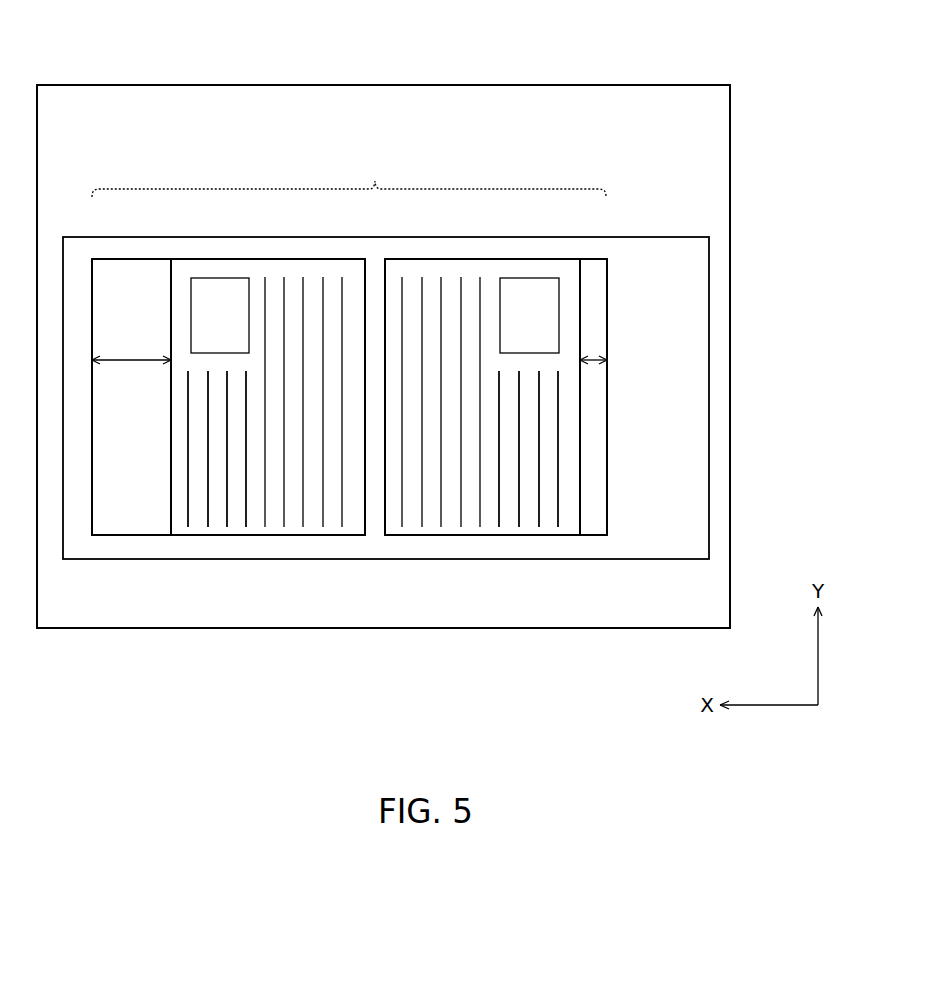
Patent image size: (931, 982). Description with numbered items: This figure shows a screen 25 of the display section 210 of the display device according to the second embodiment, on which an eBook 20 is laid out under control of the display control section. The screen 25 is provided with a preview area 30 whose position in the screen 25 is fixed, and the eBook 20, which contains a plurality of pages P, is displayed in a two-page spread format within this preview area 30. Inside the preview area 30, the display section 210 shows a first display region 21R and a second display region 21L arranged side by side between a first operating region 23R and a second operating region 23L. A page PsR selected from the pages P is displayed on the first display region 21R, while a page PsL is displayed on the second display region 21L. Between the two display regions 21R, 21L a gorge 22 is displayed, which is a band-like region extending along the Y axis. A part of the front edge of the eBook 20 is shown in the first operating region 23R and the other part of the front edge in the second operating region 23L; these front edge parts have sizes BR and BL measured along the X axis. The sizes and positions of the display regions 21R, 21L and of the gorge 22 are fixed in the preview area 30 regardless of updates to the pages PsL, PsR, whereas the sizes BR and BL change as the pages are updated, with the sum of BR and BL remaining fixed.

The screen 25 is at (157, 97).
The display section 210 is at (527, 85).
The preview area 30 is at (673, 237).
The eBook 20 is at (613, 401).
The second display region 21L is at (302, 258).
The first display region 21R is at (440, 258).
The gorge 22 is at (375, 537).
The second operating region 23L is at (128, 535).
The first operating region 23R is at (592, 535).
The page PsL is at (218, 535).
The page PsR is at (530, 535).
The size BL is at (141, 357).
The size BR is at (594, 357).
The pages P is at (349, 175).